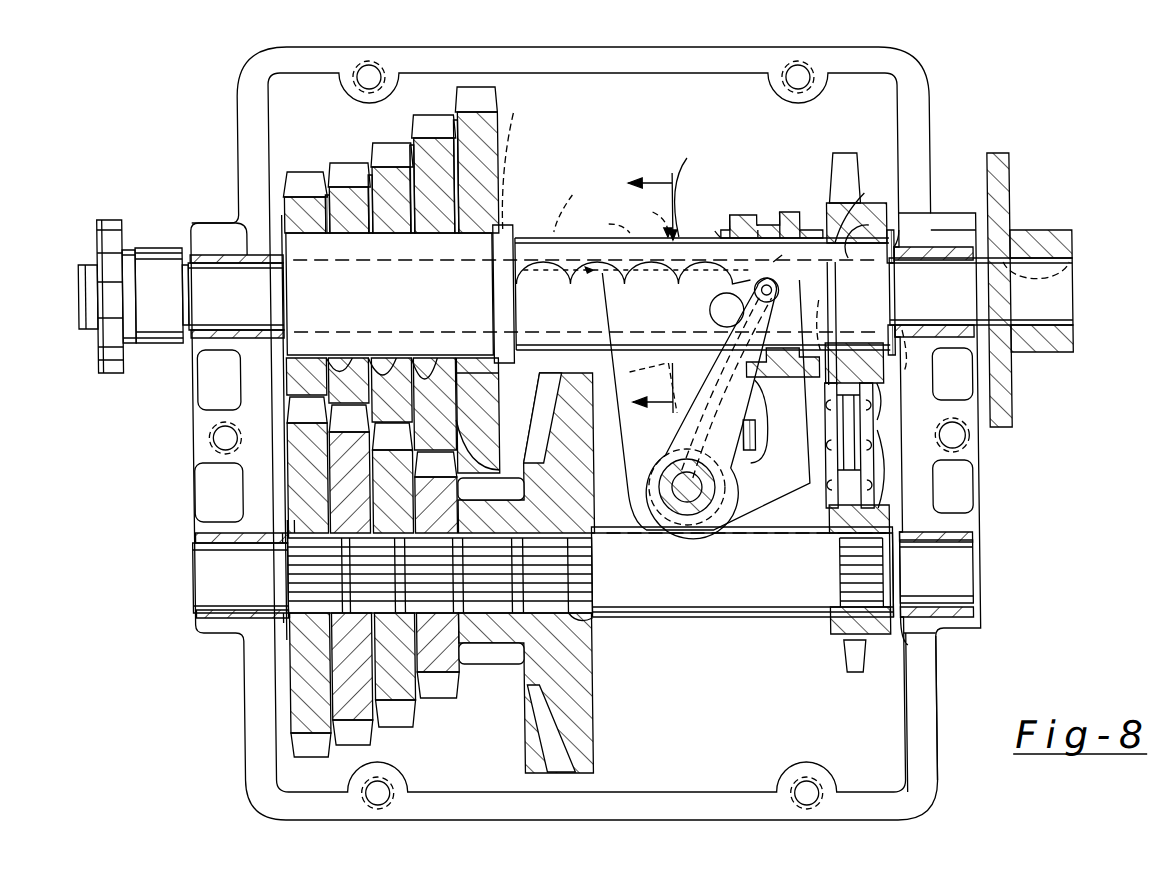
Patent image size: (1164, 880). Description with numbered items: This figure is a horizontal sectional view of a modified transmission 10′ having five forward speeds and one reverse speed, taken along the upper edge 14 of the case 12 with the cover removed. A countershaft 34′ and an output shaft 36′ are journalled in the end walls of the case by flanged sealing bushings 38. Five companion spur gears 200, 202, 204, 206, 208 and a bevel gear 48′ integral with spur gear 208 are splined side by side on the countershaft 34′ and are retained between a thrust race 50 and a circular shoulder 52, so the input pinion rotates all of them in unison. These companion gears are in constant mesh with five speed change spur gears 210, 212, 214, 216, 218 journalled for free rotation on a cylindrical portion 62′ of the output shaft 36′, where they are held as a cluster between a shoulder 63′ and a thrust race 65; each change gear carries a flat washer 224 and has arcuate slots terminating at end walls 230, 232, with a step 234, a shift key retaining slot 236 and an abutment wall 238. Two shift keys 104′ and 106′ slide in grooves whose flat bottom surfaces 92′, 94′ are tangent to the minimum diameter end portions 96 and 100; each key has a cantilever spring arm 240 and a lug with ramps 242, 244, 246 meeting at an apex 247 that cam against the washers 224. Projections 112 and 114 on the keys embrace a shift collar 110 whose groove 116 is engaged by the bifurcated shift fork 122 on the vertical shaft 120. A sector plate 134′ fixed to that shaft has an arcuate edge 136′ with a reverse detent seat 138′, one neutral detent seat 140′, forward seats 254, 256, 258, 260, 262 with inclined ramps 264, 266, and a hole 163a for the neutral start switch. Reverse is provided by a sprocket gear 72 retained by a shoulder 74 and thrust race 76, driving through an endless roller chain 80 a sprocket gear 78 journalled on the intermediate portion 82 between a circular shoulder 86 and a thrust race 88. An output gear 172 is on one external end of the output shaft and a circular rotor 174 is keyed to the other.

The modified transmission 10′ is at (956, 39).
The case 12 is at (936, 89).
The upper edge 14 is at (922, 128).
The countershaft 34′ is at (733, 617).
The output shaft 36′ is at (697, 193).
The flanged sealing bushings 38 is at (266, 222).
The bevel gear 48′ is at (586, 728).
The thrust race 50 is at (276, 637).
The circular shoulder 52 is at (580, 620).
The cylindrical portion 62′ is at (425, 317).
The shoulder 63′ is at (486, 322).
The thrust race 65 is at (279, 356).
The sprocket gear 72 is at (843, 672).
The shoulder 74 is at (838, 630).
The thrust race 76 is at (893, 642).
The sprocket gear 78 is at (850, 157).
The endless roller chain 80 is at (877, 477).
The intermediate diameter cylindrical portion 82 is at (888, 258).
The circular shoulder 86 is at (866, 212).
The thrust race 88 is at (900, 248).
The flat bottom surface 92′ is at (580, 204).
The flat bottom surface 94′ is at (462, 388).
The minimum diameter cylindrical end portion 96 is at (242, 302).
The minimum diameter cylindrical end portion 100 is at (1070, 292).
The shift key 104′ is at (642, 215).
The shift key 106′ is at (650, 293).
The shift collar 110 is at (783, 213).
The projection 112 is at (724, 228).
The projection 114 is at (808, 229).
The central circular external groove 116 is at (738, 215).
The vertical shaft 120 is at (716, 490).
The bifurcated shift fork 122 is at (743, 440).
The sector plate 134′ is at (710, 545).
The arcuate edge 136′ is at (600, 276).
The reverse detent seat 138′ is at (590, 270).
The neutral detent seat 140′ is at (656, 270).
The cylindrical hole 163a is at (706, 311).
The output gear 172 is at (94, 235).
The circular rotor 174 is at (1008, 200).
The companion spur gear 200 is at (288, 755).
The companion spur gear 202 is at (370, 735).
The companion spur gear 204 is at (368, 745).
The companion spur gear 206 is at (410, 722).
The companion spur gear 208 is at (497, 673).
The speed change spur gear 210 is at (294, 172).
The speed change spur gear 212 is at (338, 165).
The speed change spur gear 214 is at (384, 143).
The speed change spur gear 216 is at (426, 117).
The speed change spur gear 218 is at (505, 112).
The flat washer 224 is at (432, 362).
The end wall 230 is at (478, 362).
The end wall 232 is at (481, 226).
The step 234 is at (484, 228).
The shift key retaining slot 236 is at (476, 226).
The abutment wall 238 is at (470, 226).
The cantilever spring arm 240 is at (601, 222).
The ramp 242 is at (512, 232).
The ramp 244 is at (500, 176).
The ramp 246 is at (512, 140).
The apex 247 is at (505, 201).
The forward speed detent seat 254 is at (702, 281).
The forward speed detent seat 256 is at (705, 372).
The forward speed detent seat 258 is at (755, 412).
The forward speed detent seat 260 is at (815, 390).
The forward speed detent seat 262 is at (888, 398).
The inclined ramp 264 is at (708, 237).
The inclined ramp 266 is at (714, 233).